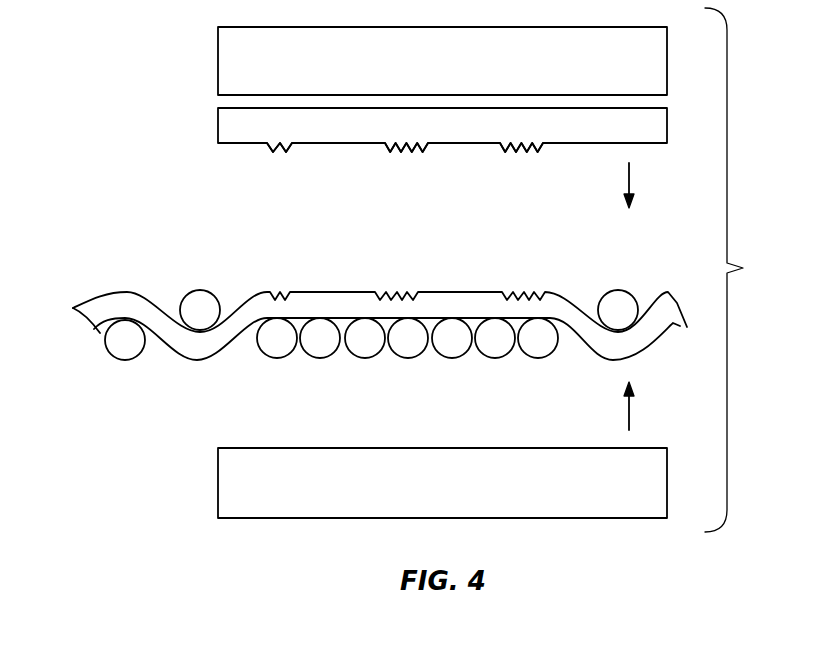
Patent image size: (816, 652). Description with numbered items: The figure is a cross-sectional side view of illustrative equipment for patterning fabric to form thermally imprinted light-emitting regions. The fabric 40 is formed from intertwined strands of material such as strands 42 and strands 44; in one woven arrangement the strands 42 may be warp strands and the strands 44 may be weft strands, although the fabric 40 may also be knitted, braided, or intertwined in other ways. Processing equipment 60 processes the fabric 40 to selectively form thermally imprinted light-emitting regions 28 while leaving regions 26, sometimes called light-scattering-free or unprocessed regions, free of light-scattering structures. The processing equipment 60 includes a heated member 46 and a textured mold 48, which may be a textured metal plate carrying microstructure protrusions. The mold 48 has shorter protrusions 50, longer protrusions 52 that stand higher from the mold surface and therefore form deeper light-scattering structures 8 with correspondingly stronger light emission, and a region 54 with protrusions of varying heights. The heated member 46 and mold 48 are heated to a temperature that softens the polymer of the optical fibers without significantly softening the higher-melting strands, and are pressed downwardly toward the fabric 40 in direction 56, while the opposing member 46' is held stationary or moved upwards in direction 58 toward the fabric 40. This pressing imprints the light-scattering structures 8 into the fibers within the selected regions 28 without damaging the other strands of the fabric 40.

The light-scattering structures 8 is at (297, 294).
The regions 26 is at (293, 277).
The thermally imprinted light-emitting regions 28 is at (73, 277).
The fabric 40 is at (41, 268).
The strands 42 is at (127, 348).
The strands 44 is at (588, 342).
The heated member 46 is at (416, 61).
The member 46' is at (415, 483).
The mold 48 is at (217, 123).
The protrusions 50 is at (305, 160).
The protrusions 52 is at (437, 160).
The region 54 is at (558, 160).
The direction 56 is at (629, 178).
The direction 58 is at (629, 410).
The processing equipment 60 is at (736, 270).